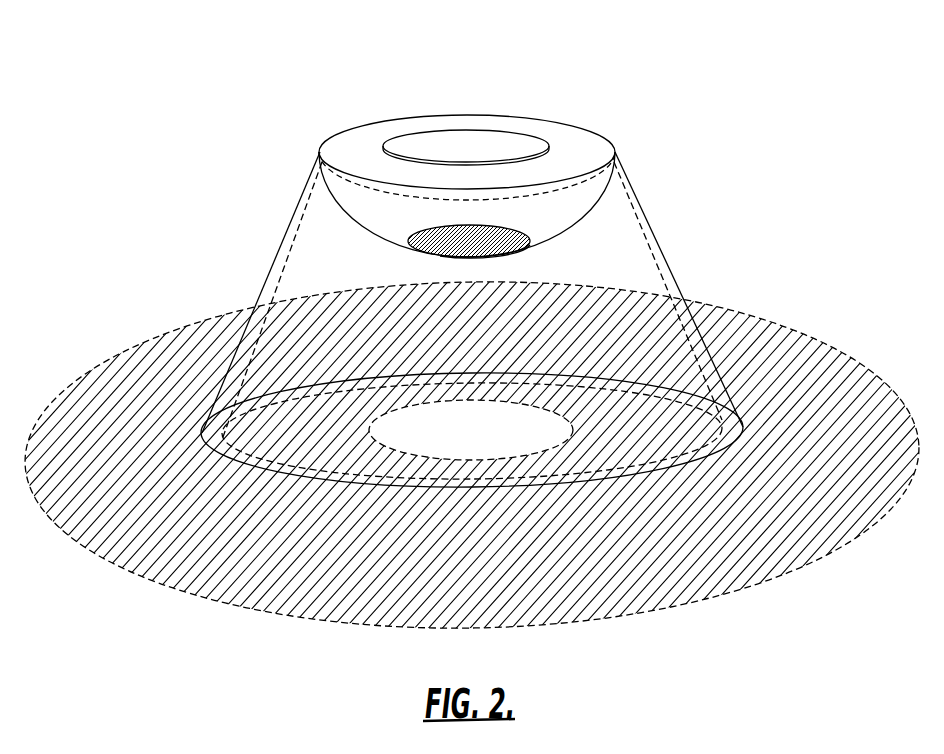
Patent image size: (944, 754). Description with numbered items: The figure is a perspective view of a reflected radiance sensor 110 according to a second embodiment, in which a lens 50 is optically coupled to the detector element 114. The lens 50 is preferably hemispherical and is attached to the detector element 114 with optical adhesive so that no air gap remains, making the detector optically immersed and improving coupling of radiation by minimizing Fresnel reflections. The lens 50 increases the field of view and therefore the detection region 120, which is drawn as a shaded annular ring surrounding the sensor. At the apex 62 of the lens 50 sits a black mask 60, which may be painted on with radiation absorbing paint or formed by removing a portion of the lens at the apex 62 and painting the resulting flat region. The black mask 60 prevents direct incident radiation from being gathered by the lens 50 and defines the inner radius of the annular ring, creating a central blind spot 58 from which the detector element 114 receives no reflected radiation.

The reflected radiance sensor 110 is at (583, 83).
The detector element 114 is at (468, 147).
The lens 50 is at (595, 195).
The black mask 60 is at (497, 232).
The apex 62 is at (517, 257).
The blind spot 58 is at (555, 423).
The detection region 120 is at (743, 313).